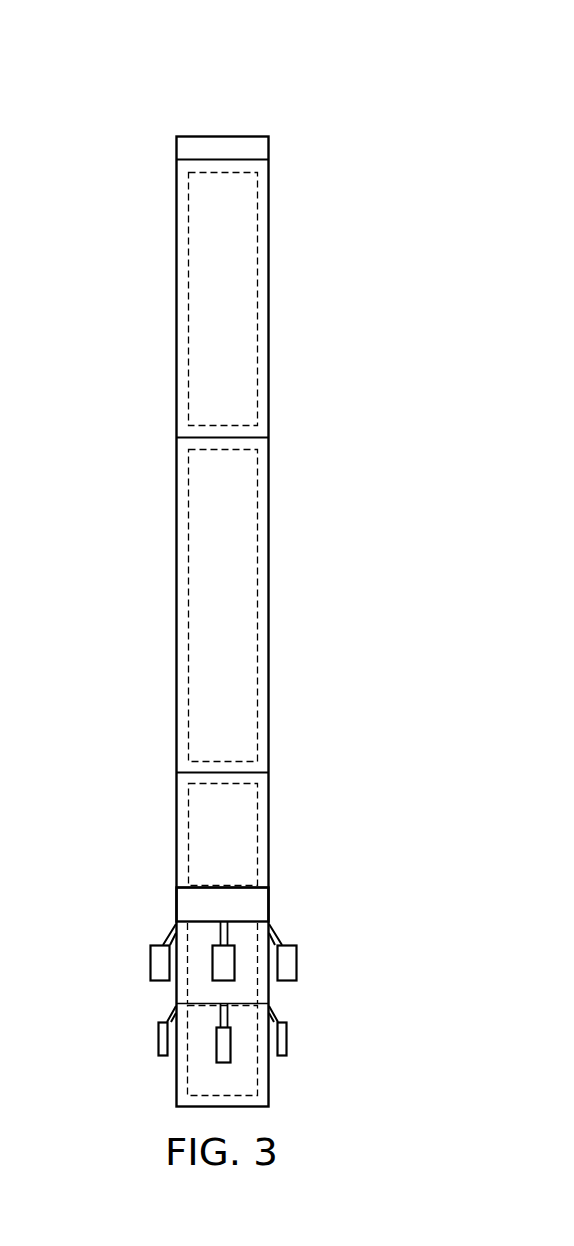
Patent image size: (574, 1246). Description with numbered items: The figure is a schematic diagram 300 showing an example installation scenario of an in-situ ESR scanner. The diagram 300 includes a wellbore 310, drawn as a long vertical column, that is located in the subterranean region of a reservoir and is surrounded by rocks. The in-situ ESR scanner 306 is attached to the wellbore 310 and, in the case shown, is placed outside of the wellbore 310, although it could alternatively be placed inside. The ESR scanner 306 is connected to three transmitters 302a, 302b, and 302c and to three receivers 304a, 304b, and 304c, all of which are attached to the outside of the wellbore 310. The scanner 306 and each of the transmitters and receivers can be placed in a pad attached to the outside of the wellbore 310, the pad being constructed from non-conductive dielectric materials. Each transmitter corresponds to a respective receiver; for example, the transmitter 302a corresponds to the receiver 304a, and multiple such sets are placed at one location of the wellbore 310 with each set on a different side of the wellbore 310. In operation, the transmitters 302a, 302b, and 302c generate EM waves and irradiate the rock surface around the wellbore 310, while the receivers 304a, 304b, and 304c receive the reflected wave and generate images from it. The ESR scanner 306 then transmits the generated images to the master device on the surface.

The schematic diagram 300 is at (257, 76).
The wellbore 310 is at (176, 528).
The in-situ ESR scanner 306 is at (270, 906).
The transmitter 302a is at (297, 965).
The transmitter 302b is at (150, 962).
The transmitter 302c is at (222, 982).
The receiver 304a is at (288, 1040).
The receiver 304b is at (157, 1038).
The receiver 304c is at (223, 1063).